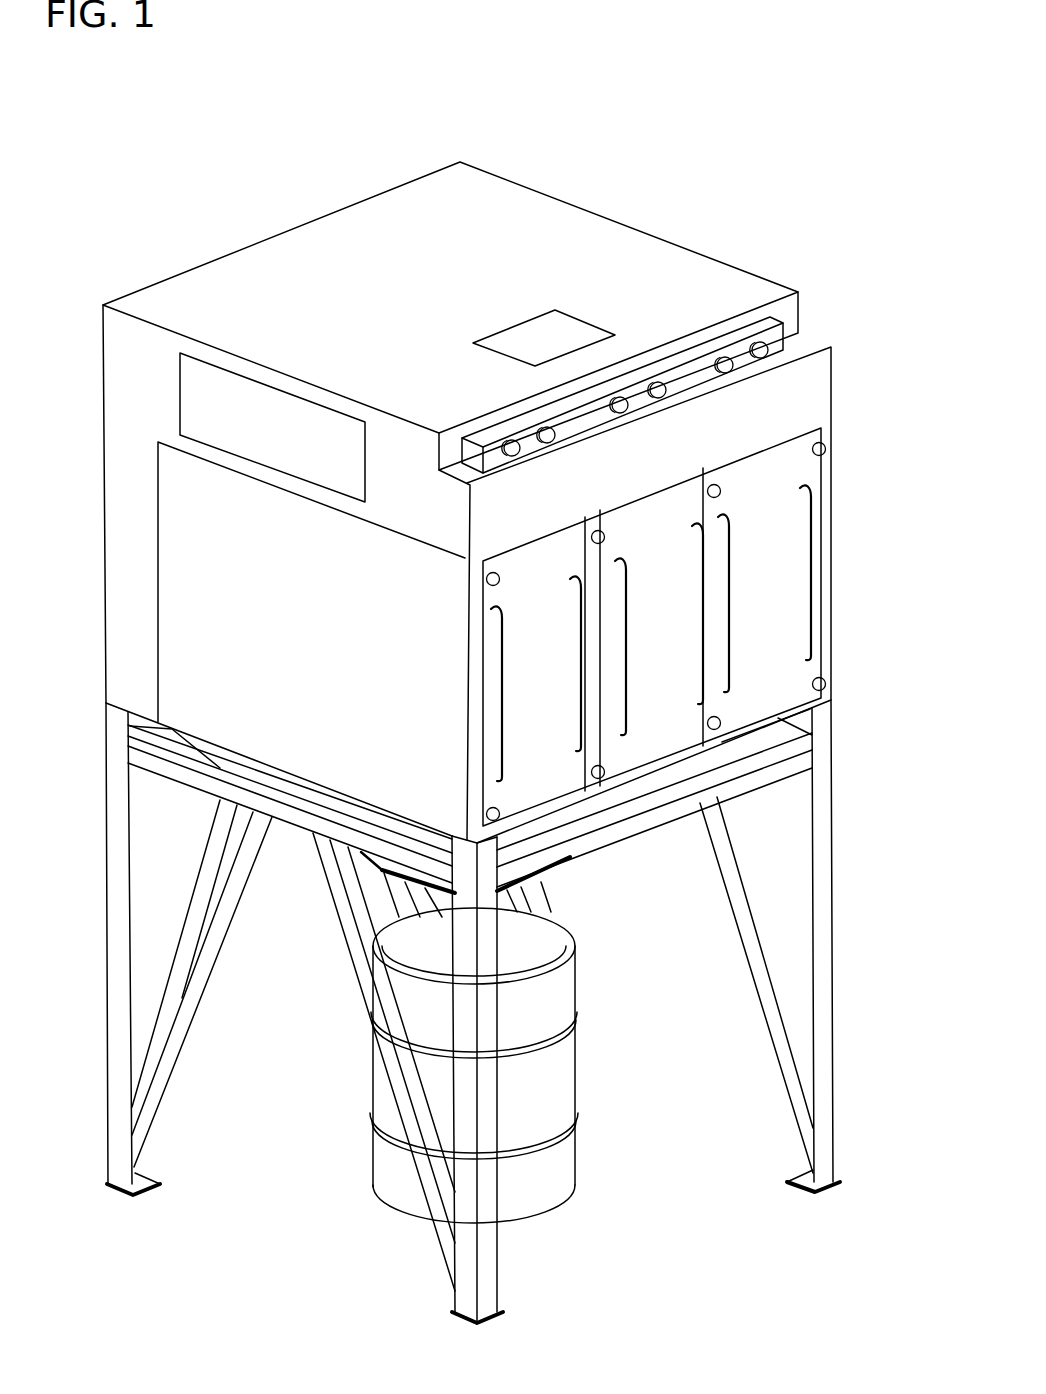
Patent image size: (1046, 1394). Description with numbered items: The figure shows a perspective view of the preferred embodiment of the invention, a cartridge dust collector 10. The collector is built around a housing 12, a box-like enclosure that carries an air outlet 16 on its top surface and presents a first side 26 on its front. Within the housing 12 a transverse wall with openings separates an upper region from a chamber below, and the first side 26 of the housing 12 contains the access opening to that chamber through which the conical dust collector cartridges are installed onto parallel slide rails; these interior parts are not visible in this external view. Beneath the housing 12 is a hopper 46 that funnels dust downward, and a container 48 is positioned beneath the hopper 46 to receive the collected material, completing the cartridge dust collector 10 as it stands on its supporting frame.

The cartridge dust collector 10 is at (616, 258).
The housing 12 is at (135, 352).
The air outlet 16 is at (556, 333).
The first side 26 is at (807, 393).
The hopper 46 is at (565, 868).
The container 48 is at (555, 1068).